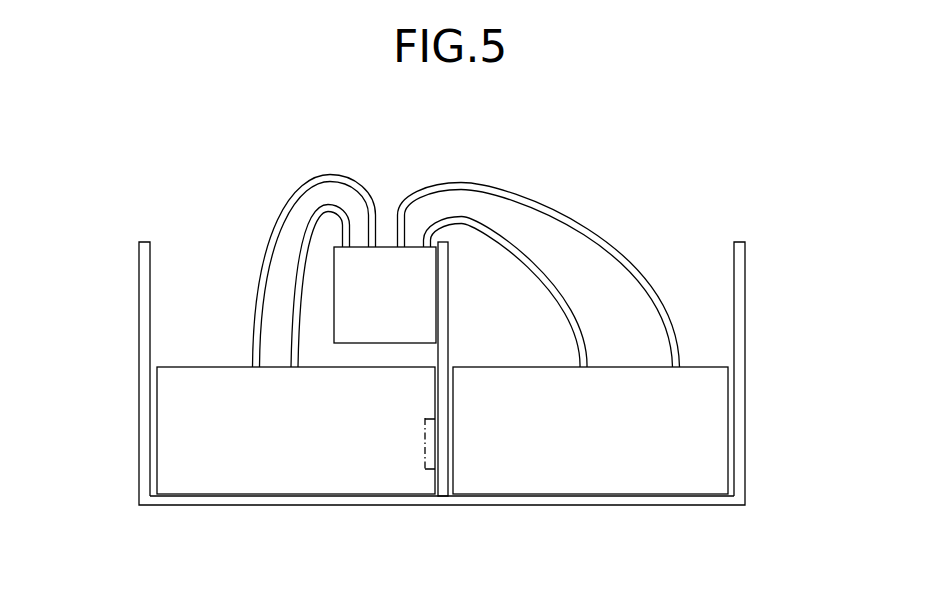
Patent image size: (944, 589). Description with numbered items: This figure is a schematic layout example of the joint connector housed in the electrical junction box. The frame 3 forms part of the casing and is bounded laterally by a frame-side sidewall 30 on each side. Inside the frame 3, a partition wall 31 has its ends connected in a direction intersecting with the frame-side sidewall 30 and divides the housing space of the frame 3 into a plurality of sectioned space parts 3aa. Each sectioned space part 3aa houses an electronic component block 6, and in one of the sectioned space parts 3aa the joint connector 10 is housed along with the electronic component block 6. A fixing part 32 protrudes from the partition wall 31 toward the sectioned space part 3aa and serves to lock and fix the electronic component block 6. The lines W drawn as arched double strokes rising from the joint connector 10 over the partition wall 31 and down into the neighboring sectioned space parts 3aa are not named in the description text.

The frame 3 is at (97, 327).
The frame-side sidewall 30 is at (146, 248).
The partition wall 31 is at (442, 300).
The fixing part 32 is at (425, 460).
The sectioned space part 3aa is at (206, 283).
The electronic component block 6 is at (177, 455).
The joint connector 10 is at (386, 252).
The wiring W is at (543, 204).